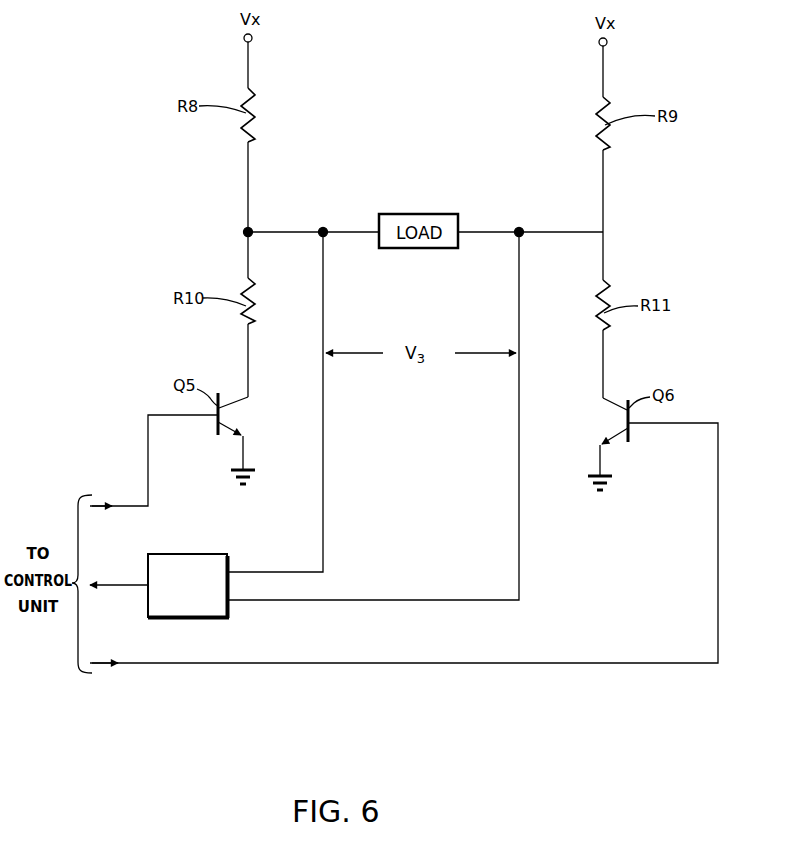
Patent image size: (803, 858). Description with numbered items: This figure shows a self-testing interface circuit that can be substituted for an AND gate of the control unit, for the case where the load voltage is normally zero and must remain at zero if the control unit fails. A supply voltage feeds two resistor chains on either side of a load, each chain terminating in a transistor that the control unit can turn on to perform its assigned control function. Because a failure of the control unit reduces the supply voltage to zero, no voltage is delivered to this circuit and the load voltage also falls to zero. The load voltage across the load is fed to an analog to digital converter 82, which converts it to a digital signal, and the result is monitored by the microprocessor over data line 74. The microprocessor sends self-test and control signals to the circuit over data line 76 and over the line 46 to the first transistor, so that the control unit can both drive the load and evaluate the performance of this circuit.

The control line to base of transistor Q5 46 is at (148, 471).
The data line 74 is at (112, 588).
The data line 76 is at (205, 663).
The analog to digital converter 82 is at (193, 617).